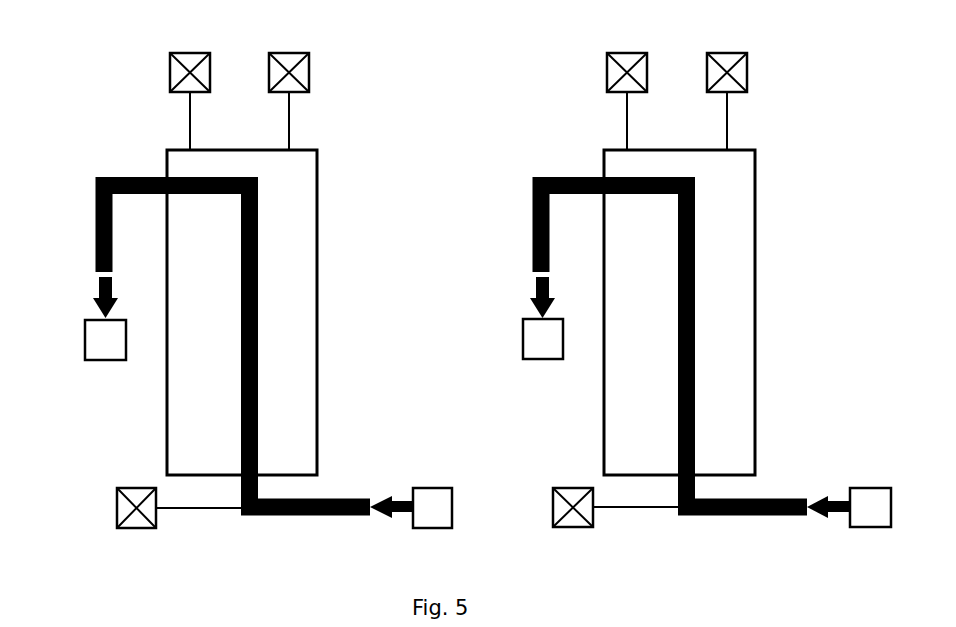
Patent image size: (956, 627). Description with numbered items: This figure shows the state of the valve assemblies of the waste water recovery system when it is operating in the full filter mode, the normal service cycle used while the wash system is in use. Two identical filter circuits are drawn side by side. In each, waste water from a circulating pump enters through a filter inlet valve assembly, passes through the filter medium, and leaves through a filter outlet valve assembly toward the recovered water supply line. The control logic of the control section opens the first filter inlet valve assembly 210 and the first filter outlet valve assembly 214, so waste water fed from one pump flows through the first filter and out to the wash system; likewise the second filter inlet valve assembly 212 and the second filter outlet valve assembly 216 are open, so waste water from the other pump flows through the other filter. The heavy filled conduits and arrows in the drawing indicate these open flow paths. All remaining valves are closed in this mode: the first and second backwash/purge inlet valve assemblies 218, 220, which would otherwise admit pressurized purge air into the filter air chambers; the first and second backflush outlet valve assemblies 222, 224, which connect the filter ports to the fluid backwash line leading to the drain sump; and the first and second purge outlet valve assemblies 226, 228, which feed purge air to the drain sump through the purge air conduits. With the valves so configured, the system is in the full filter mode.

The first filter inlet valve assembly 210 is at (430, 532).
The second filter inlet valve assembly 212 is at (868, 530).
The first filter outlet valve assembly 214 is at (85, 340).
The second filter outlet valve assembly 216 is at (523, 340).
The first backwash/purge inlet valve assembly 218 is at (168, 68).
The second backwash/purge inlet valve assembly 220 is at (606, 68).
The first backflush outlet valve assembly 222 is at (135, 530).
The second backflush outlet valve assembly 224 is at (575, 529).
The first purge outlet valve assembly 226 is at (310, 79).
The second purge outlet valve assembly 228 is at (748, 79).